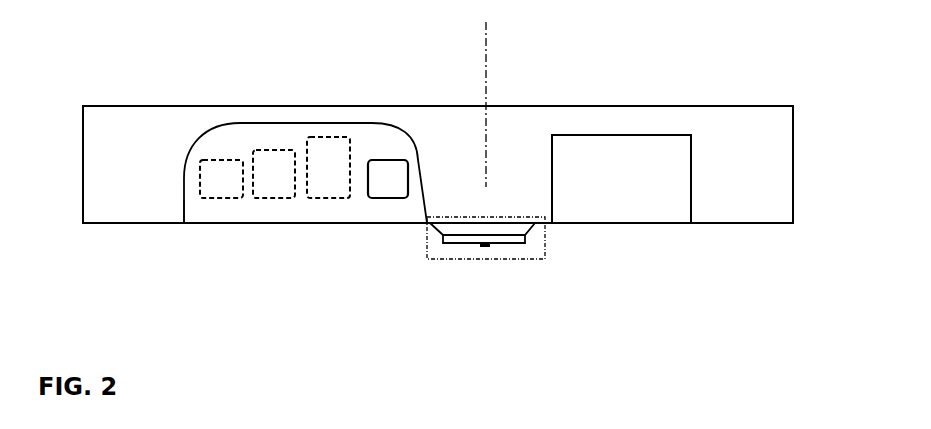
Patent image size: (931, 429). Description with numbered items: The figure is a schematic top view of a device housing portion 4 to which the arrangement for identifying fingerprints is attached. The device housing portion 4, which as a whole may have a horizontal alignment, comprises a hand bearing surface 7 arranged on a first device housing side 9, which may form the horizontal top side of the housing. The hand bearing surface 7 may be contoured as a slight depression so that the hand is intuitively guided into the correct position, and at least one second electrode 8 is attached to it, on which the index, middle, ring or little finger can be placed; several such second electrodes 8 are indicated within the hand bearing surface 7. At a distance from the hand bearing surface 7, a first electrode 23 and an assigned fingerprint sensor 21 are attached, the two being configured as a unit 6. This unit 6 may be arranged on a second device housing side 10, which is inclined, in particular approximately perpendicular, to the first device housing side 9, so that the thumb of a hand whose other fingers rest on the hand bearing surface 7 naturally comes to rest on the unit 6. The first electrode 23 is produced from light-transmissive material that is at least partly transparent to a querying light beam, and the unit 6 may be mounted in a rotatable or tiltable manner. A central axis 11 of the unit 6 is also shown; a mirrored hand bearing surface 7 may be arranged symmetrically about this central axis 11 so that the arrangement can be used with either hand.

The device housing portion 4 is at (130, 101).
The unit 6 is at (504, 268).
The hand bearing surface 7 is at (252, 133).
The second electrode 8 is at (229, 190).
The first device housing side 9 is at (162, 215).
The second device housing side 10 is at (128, 224).
The central axis 11 is at (485, 43).
The fingerprint sensor 21 is at (522, 240).
The first electrode 23 is at (483, 247).